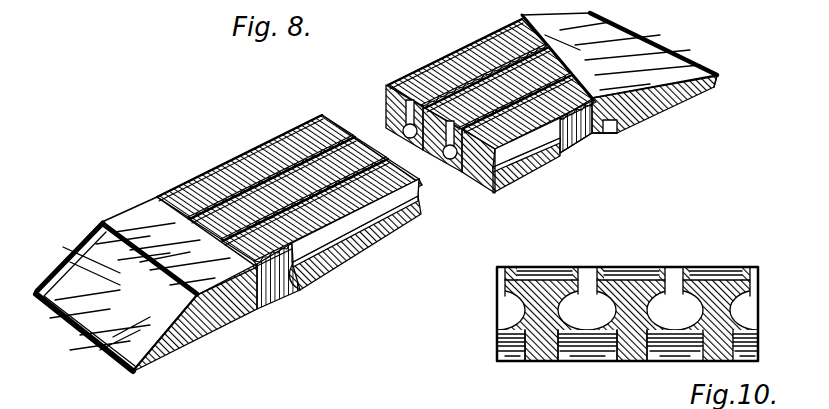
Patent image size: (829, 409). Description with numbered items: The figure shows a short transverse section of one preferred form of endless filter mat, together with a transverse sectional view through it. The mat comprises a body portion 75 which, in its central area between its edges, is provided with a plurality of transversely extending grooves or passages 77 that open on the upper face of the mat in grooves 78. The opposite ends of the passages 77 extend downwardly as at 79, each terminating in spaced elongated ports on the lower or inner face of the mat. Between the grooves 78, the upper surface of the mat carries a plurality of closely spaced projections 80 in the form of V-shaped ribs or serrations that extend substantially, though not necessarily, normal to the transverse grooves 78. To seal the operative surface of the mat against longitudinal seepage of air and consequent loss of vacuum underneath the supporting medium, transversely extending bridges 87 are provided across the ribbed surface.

In FIG. 8, the body portion 75 is at (203, 333).
In FIG. 10, the body portion 75 is at (533, 360).
In FIG. 8, the grooves or passages 77 is at (457, 152).
In FIG. 10, the grooves or passages 77 is at (627, 310).
In FIG. 8, the grooves 78 is at (262, 186).
In FIG. 10, the grooves 78 is at (586, 275).
In FIG. 8, the downwardly extending ends of the passages 79 is at (268, 300).
In FIG. 10, the downwardly extending ends of the passages 79 is at (593, 353).
In FIG. 8, the projections 80 is at (445, 64).
In FIG. 10, the projections 80 is at (547, 270).
In FIG. 8, the bridges 87 is at (325, 118).
In FIG. 10, the bridges 87 is at (515, 265).